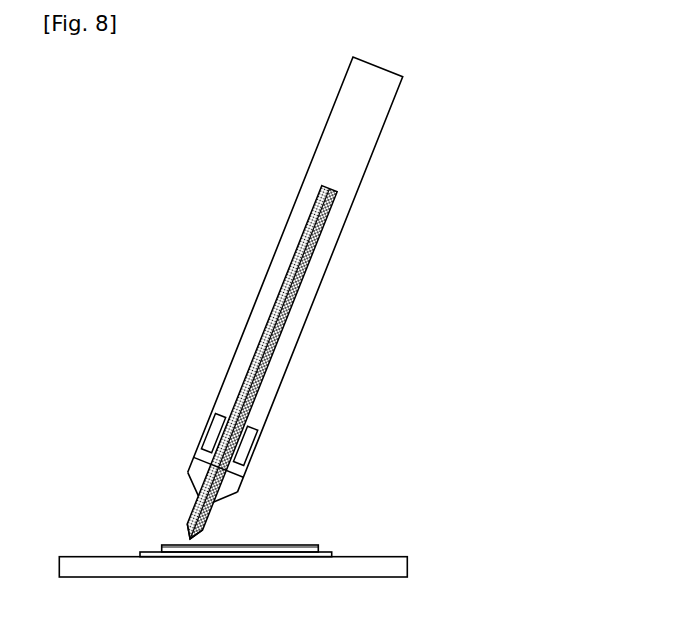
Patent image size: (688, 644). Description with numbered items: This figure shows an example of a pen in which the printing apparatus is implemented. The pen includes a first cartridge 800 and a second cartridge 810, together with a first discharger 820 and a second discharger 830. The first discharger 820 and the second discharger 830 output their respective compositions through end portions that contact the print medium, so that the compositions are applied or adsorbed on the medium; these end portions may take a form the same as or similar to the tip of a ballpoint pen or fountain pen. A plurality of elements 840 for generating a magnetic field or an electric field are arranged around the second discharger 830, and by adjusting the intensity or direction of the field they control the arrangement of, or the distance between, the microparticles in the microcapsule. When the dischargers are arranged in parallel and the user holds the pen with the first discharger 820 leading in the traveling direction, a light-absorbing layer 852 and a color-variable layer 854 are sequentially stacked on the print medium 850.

The first cartridge 800 is at (293, 260).
The second cartridge 810 is at (308, 265).
The first discharger 820 is at (196, 493).
The second discharger 830 is at (211, 505).
The elements for generating a magnetic field or an electric field 840 is at (250, 446).
The print medium 850 is at (407, 566).
The light-absorbing layer 852 is at (330, 551).
The color-variable layer 854 is at (317, 545).